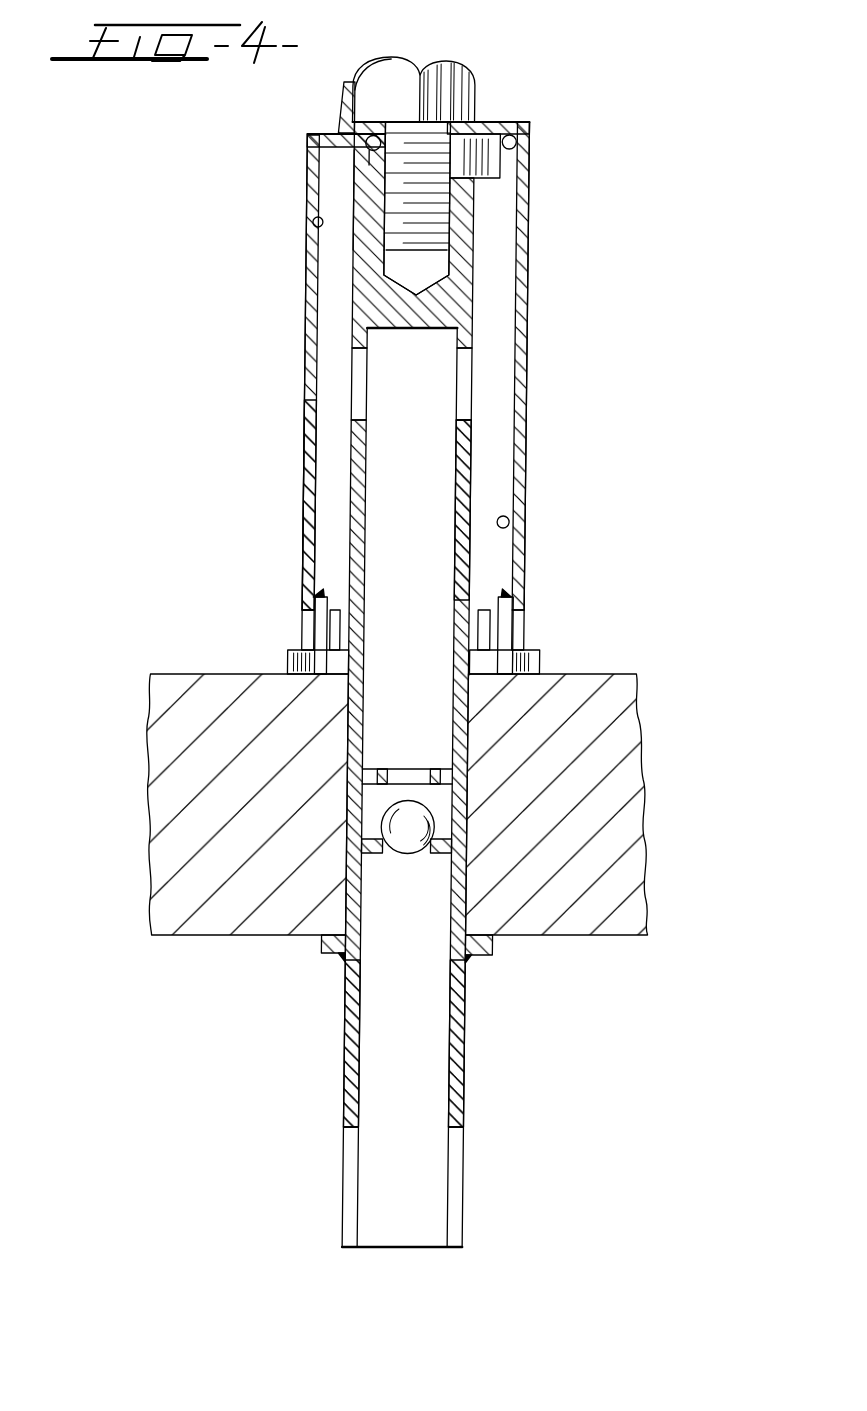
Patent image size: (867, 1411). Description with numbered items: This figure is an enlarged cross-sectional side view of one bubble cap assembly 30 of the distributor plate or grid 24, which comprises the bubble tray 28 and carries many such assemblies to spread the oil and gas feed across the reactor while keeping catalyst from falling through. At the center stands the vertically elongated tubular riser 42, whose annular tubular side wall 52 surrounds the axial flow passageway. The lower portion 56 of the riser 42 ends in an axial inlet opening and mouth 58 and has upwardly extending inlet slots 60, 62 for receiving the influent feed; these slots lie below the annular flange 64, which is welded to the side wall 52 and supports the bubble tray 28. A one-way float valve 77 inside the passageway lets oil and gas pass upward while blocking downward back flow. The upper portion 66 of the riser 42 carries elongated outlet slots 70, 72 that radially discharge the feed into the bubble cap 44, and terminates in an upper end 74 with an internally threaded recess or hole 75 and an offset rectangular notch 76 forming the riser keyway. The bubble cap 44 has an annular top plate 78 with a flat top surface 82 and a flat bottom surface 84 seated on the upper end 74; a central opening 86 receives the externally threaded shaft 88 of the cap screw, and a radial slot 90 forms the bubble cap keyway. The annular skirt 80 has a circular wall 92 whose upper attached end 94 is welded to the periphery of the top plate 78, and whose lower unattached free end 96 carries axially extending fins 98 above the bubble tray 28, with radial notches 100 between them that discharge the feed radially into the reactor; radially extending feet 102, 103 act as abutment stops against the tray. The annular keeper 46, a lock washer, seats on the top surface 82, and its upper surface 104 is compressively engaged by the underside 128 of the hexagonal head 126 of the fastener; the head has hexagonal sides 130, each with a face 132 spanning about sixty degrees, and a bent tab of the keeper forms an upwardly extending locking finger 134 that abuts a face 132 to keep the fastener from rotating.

The distributor plate or grid 24 is at (200, 674).
The bubble tray 28 is at (645, 735).
The bubble cap assembly 30 is at (268, 381).
The tubular riser 42 is at (472, 1014).
The bubble cap 44 is at (523, 275).
The annular keeper 46 is at (523, 127).
The annular tubular side wall 52 is at (465, 1083).
The lower portion of the riser 56 is at (345, 1072).
The axial inlet opening and mouth 58 is at (391, 1248).
The inlet slot 60 is at (343, 1177).
The inlet slot 62 is at (465, 1172).
The annular flange 64 is at (322, 948).
The upper portion of the riser 66 is at (473, 453).
The outlet slot 70 is at (355, 405).
The outlet slot 72 is at (470, 392).
The upper end of the riser 74 is at (350, 197).
The internally threaded recess or hole 75 is at (387, 238).
The vertical rectangular notch 76 is at (470, 185).
The one-way valve 77 is at (407, 855).
The annular top plate 78 is at (328, 138).
The annular skirt 80 is at (305, 545).
The top surface of the top plate 82 is at (330, 137).
The bottom surface of the top plate 84 is at (373, 145).
The central opening 86 is at (377, 162).
The externally threaded shaft 88 is at (440, 228).
The radial slot 90 is at (516, 146).
The circular wall of the skirt 92 is at (513, 522).
The upper attached end of the wall 94 is at (318, 225).
The lower unattached free end of the wall 96 is at (506, 600).
The fins 98 is at (473, 650).
The radial notches 100 is at (340, 636).
The radially extending foot 102 is at (290, 652).
The radially extending foot 103 is at (537, 655).
The upper surface of the lock washer 104 is at (478, 122).
The hexagonal head 126 is at (465, 65).
The underside of the head 128 is at (402, 127).
The hexagonal sides 130 is at (457, 83).
The face of the hexagonal side 132 is at (373, 75).
The locking finger 134 is at (343, 98).